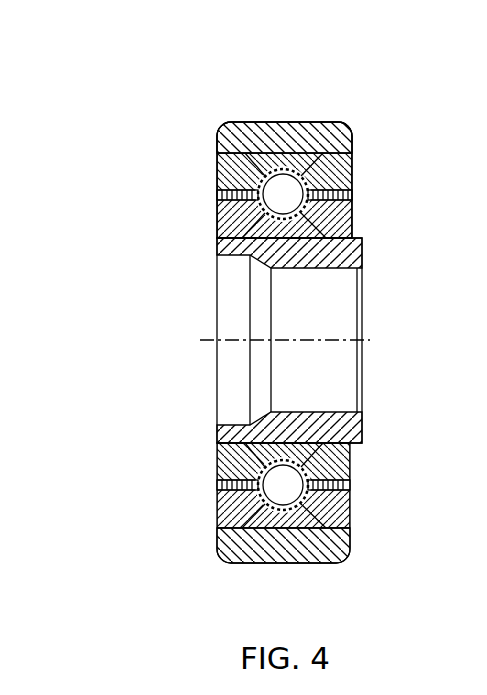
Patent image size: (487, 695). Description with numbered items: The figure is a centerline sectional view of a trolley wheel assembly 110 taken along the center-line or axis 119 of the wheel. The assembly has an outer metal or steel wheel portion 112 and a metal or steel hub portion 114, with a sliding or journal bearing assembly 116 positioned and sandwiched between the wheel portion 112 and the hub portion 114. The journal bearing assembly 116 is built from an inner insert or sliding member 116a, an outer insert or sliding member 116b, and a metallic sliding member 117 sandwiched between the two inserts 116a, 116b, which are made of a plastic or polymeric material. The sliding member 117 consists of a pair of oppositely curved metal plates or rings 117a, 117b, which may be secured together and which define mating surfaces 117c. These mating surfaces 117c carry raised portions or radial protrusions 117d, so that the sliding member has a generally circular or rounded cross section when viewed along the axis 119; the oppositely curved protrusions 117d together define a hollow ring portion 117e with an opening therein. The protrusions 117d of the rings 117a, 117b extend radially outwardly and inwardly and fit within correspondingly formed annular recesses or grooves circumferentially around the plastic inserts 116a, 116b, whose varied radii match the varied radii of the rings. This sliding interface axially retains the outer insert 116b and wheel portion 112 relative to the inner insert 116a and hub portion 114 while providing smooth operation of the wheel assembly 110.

The trolley wheel assembly 110 is at (291, 66).
The wheel portion 112 is at (320, 112).
The hub portion 114 is at (372, 251).
The journal bearing assembly 116 is at (156, 192).
The inner insert 116a is at (217, 228).
The outer insert 116b is at (217, 172).
The sliding member 117 is at (364, 195).
The metal ring 117a is at (350, 218).
The metal ring 117b is at (228, 512).
The mating surfaces 117c is at (247, 121).
The radial protrusions 117d is at (273, 188).
The hollow ring portion 117e is at (302, 470).
The axis 119 is at (206, 342).